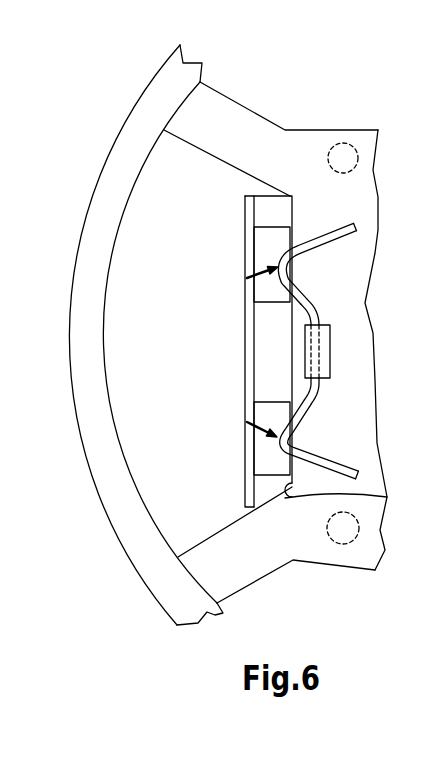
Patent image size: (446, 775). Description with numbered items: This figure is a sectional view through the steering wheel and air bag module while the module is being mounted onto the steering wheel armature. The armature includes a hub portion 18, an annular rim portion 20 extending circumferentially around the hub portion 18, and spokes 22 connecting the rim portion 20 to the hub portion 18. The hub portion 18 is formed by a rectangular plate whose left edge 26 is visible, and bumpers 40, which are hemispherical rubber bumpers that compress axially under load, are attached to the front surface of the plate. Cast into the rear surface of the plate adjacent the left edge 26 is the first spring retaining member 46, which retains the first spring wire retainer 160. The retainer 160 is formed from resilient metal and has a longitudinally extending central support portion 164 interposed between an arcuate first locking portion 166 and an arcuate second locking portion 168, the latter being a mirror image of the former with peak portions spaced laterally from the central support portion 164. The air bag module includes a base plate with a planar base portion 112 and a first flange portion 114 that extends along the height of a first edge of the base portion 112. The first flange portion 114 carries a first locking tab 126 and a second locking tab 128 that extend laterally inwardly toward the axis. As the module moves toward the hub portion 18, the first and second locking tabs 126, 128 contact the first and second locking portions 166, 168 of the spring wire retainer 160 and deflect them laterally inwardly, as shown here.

The hub portion 18 is at (348, 273).
The annular rim portion 20 is at (98, 193).
The spokes 22 is at (228, 127).
The left edge 26 is at (380, 496).
The bumpers 40 is at (343, 158).
The first spring retaining member 46 is at (332, 353).
The base portion 112 is at (268, 363).
The first flange portion 114 is at (245, 338).
The first locking tab 126 is at (265, 252).
The second locking tab 128 is at (268, 455).
The first spring wire retainer 160 is at (357, 342).
The central support portion 164 is at (318, 315).
The first locking portion 166 is at (290, 262).
The second locking portion 168 is at (287, 440).